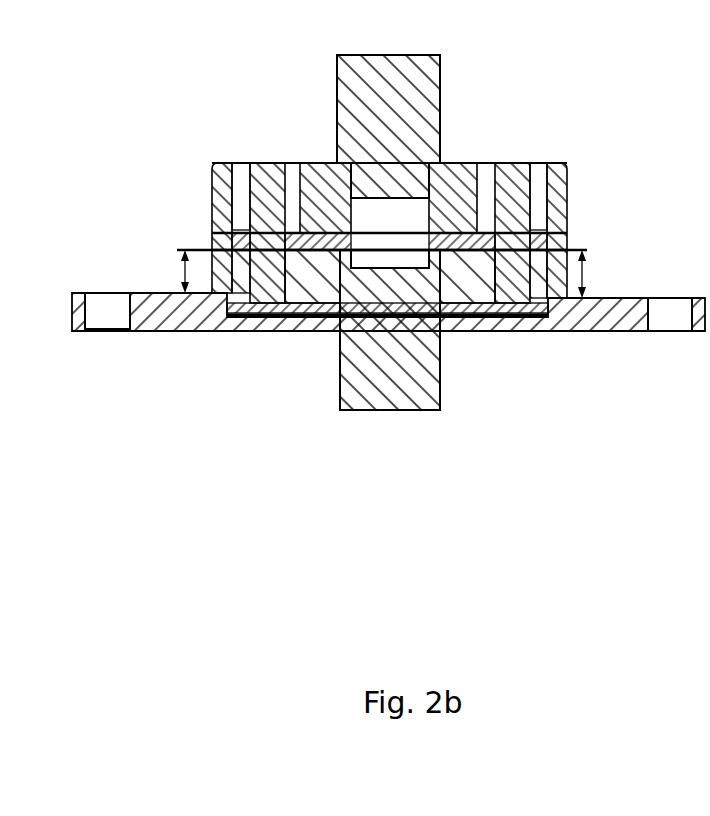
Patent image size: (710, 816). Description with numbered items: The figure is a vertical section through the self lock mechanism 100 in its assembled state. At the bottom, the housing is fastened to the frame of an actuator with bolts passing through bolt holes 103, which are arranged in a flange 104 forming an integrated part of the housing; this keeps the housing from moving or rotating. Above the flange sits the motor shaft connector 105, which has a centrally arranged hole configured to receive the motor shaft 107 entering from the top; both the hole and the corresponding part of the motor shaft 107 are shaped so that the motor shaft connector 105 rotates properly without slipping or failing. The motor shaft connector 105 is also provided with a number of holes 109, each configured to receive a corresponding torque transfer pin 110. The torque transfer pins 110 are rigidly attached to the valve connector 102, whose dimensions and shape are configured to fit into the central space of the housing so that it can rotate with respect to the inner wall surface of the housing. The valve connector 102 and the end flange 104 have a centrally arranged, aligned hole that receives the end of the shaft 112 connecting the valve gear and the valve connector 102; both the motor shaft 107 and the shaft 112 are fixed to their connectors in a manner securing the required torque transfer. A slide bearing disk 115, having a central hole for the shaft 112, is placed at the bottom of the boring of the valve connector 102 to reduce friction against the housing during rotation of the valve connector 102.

The self lock mechanism 100 is at (479, 430).
The valve connector 102 is at (323, 283).
The bolt holes 103 is at (107, 317).
The flange 104 is at (592, 320).
The motor shaft connector 105 is at (557, 202).
The motor shaft 107 is at (402, 93).
The holes 109 is at (242, 195).
The torque transfer pins 110 is at (262, 190).
The shaft 112 is at (377, 352).
The slide bearing disk 115 is at (480, 307).